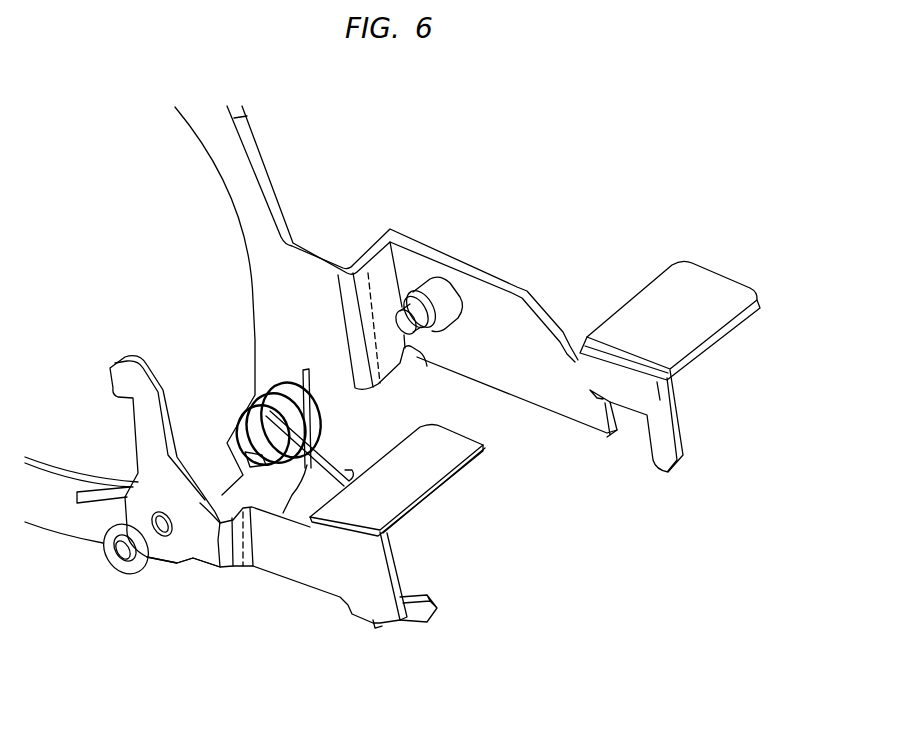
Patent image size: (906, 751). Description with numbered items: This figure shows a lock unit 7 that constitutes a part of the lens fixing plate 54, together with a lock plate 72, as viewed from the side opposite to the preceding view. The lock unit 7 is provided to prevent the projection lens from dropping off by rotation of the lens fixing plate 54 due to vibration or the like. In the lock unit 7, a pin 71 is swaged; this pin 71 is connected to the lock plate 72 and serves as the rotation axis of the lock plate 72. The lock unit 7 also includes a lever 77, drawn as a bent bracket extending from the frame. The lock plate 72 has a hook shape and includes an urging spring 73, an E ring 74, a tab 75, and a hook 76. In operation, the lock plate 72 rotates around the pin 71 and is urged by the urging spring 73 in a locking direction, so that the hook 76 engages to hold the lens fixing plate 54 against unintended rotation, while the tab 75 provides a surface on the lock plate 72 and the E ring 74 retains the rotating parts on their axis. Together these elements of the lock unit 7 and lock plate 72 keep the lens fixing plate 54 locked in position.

The lock unit 7 is at (788, 126).
The lens fixing plate 54 is at (258, 242).
The pin 71 is at (440, 288).
The lock plate 72 is at (373, 600).
The urging spring 73 is at (242, 412).
The E ring 74 is at (117, 560).
The tab 75 is at (410, 477).
The hook 76 is at (130, 385).
The lever 77 is at (683, 308).